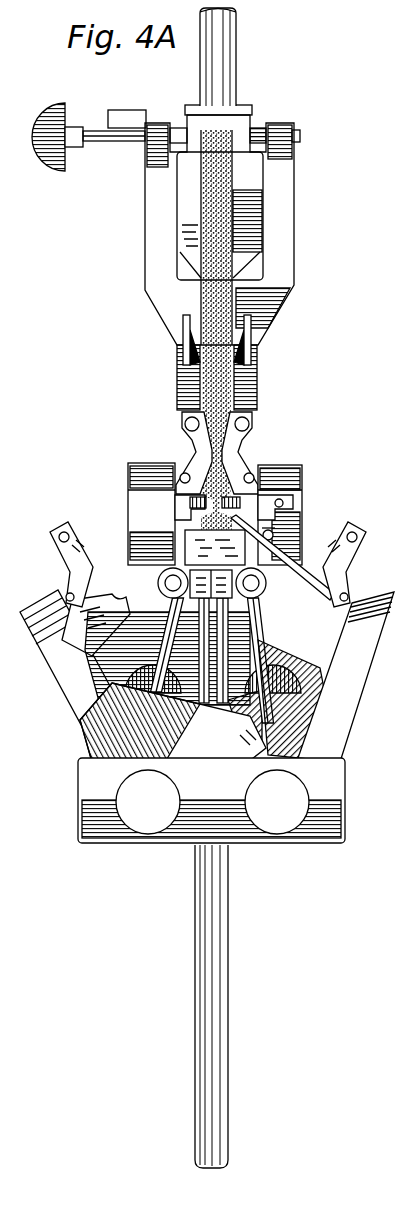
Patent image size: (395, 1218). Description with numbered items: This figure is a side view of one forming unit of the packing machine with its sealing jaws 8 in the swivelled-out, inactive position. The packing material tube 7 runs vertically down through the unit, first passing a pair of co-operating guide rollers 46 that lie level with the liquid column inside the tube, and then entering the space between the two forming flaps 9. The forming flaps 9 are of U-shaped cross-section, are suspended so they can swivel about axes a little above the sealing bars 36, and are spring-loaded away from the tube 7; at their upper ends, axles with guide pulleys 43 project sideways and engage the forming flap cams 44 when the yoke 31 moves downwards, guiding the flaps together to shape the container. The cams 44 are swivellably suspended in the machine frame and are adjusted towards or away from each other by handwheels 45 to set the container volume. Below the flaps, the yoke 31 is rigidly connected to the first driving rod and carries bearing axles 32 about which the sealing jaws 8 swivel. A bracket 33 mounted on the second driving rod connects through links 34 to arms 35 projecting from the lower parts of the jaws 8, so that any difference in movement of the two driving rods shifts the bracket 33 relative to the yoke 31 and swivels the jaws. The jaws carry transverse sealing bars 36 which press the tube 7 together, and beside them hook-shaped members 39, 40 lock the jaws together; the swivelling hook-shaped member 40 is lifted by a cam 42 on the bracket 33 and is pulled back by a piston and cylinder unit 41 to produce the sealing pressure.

The packing material tube 7 is at (211, 250).
The handwheel 45 is at (66, 156).
The guide rollers 46 is at (178, 350).
The forming flap cam 44 is at (183, 440).
The sealing bar 36 is at (245, 448).
The sealing jaw 8 is at (140, 557).
The piston and cylinder unit 41 is at (297, 476).
The hook-shaped member 39 is at (180, 508).
The cam 42 is at (306, 545).
The arm 35 is at (340, 745).
The link 34 is at (345, 708).
The bracket 33 is at (248, 525).
The forming flap 9 is at (200, 453).
The guide pulley 43 is at (188, 420).
The hook-shaped member 40 is at (355, 592).
The yoke 31 is at (187, 815).
The bearing axle 32 is at (142, 808).